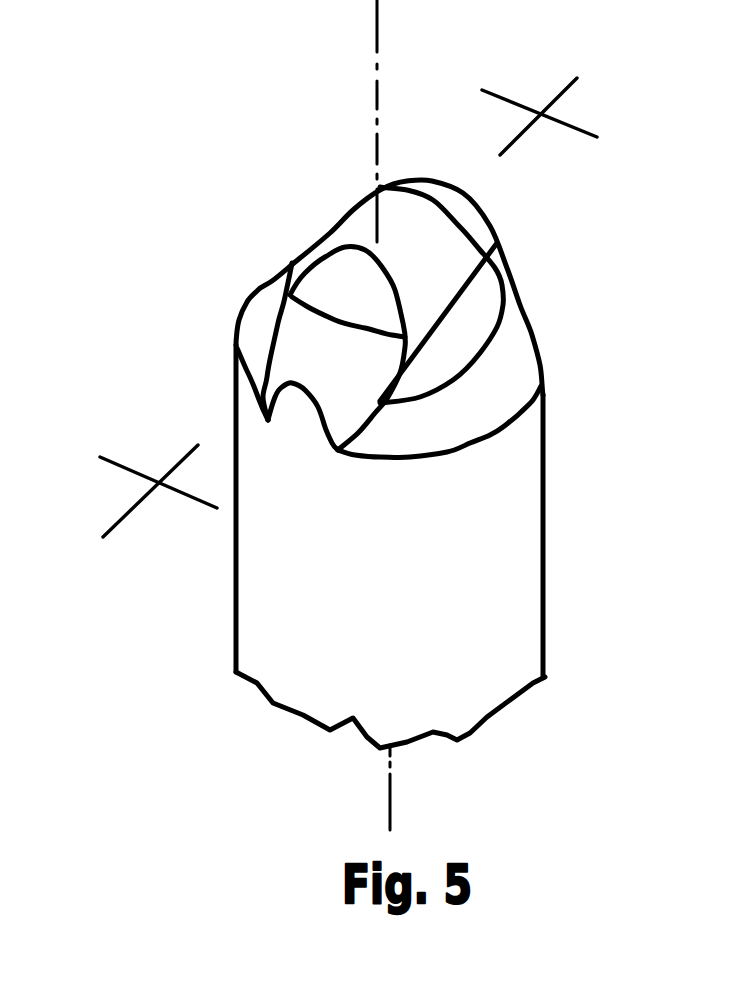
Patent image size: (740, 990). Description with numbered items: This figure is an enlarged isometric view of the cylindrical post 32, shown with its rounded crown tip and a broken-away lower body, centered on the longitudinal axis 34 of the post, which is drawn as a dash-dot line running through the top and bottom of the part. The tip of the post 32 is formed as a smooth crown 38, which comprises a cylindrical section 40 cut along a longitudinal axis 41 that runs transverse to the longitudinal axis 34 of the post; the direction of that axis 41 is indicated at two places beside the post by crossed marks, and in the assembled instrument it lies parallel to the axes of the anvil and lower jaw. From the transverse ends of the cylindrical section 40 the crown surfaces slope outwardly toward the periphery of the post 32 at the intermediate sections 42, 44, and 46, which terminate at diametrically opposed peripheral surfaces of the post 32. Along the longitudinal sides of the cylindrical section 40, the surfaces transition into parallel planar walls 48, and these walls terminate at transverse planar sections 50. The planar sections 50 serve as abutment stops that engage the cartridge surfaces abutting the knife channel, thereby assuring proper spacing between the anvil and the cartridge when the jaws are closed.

The cylindrical post 32 is at (543, 510).
The longitudinal axis of the post 34 is at (378, 38).
The smooth crown 38 is at (362, 225).
The cylindrical section 40 is at (417, 223).
The longitudinal axis of the cylindrical section 41 is at (558, 90).
The intermediate section 42 is at (430, 182).
The intermediate section 44 is at (287, 331).
The intermediate section 46 is at (237, 348).
The parallel planar walls 48 is at (453, 308).
The transverse planar sections 50 is at (258, 318).